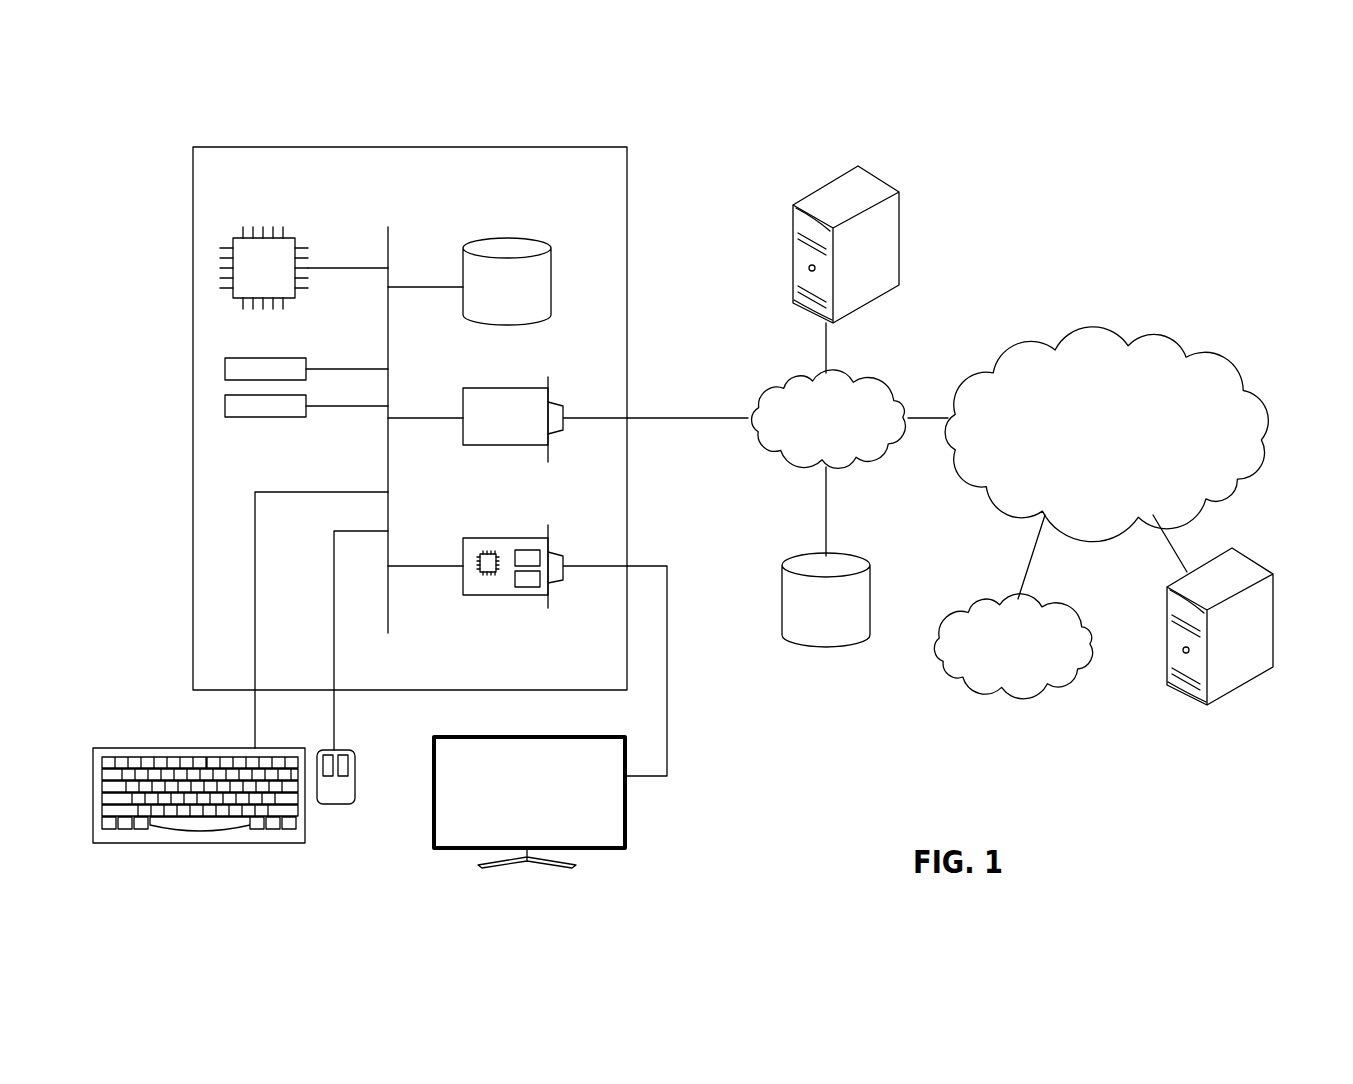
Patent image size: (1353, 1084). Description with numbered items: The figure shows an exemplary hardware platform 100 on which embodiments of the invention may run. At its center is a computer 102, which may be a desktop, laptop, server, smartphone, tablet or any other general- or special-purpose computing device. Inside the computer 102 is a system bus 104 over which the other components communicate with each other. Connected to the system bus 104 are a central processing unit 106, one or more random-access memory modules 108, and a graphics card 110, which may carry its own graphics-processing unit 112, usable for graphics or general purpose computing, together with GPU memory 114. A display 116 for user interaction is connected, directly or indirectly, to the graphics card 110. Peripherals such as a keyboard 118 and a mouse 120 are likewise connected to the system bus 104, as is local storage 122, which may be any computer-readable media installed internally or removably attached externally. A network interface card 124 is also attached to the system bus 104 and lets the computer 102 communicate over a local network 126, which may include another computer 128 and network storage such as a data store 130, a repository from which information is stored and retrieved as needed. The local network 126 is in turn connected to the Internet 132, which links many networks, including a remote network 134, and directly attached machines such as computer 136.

The system 100 is at (1196, 143).
The computer 102 is at (580, 147).
The system bus 104 is at (388, 238).
The central processing unit (CPU) 106 is at (291, 238).
The random-access memory (RAM) modules 108 is at (306, 398).
The graphics card 110 is at (542, 635).
The graphics-processing unit (GPU) 112 is at (486, 576).
The GPU memory 114 is at (525, 587).
The display 116 is at (627, 830).
The keyboard 118 is at (200, 845).
The mouse 120 is at (333, 805).
The local storage 122 is at (552, 266).
The network interface card (NIC) 124 is at (463, 400).
The local network 126 is at (883, 373).
The computer 128 is at (883, 180).
The data store 130 is at (862, 551).
The Internet 132 is at (1155, 340).
The remote network 134 is at (1075, 599).
The computer 136 is at (1245, 560).